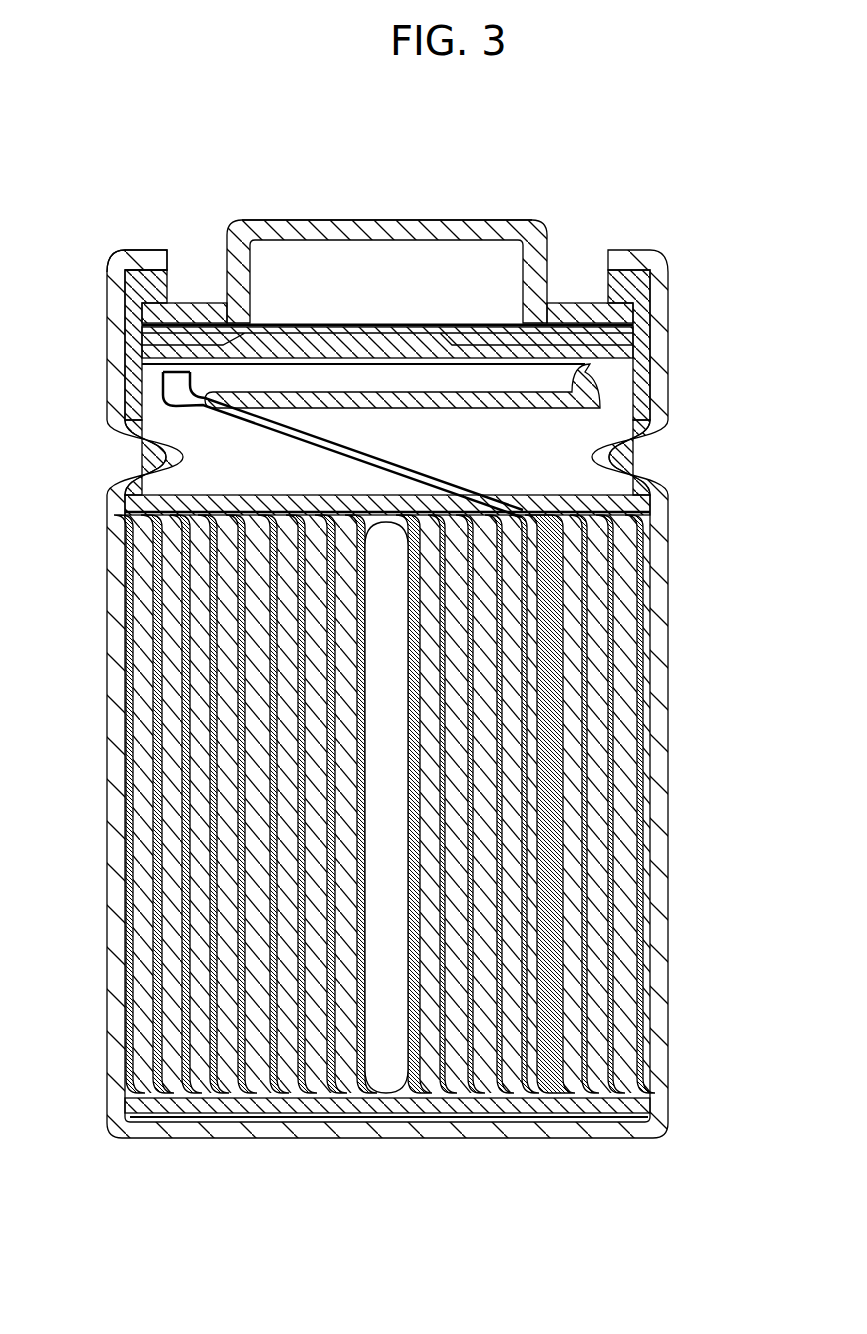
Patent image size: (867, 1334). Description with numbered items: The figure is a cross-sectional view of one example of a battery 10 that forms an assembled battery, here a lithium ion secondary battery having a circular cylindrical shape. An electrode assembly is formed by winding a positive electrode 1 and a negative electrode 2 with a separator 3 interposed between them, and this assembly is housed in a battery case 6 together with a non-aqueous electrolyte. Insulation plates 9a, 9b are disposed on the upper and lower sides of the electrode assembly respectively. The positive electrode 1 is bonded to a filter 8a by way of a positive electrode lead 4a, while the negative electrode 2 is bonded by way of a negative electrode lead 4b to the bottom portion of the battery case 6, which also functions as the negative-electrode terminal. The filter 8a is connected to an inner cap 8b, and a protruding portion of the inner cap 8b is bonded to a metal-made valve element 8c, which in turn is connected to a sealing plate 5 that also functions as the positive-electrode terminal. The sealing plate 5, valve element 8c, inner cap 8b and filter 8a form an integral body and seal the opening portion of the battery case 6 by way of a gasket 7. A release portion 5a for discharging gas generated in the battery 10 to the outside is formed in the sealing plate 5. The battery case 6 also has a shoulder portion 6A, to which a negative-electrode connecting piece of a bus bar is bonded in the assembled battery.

The battery 10 is at (668, 156).
The battery case 6 is at (107, 720).
The shoulder portion 6A is at (112, 250).
The gasket 7 is at (665, 292).
The sealing plate 5 is at (480, 220).
The release portion 5a is at (388, 220).
The valve element 8c is at (227, 300).
The inner cap 8b is at (338, 322).
The filter 8a is at (655, 386).
The positive electrode lead 4a is at (178, 455).
The insulation plate 9a is at (668, 498).
The positive electrode 1 is at (655, 830).
The negative electrode 2 is at (652, 790).
The separator 3 is at (652, 745).
The insulation plate 9b is at (655, 1098).
The negative electrode lead 4b is at (427, 1122).